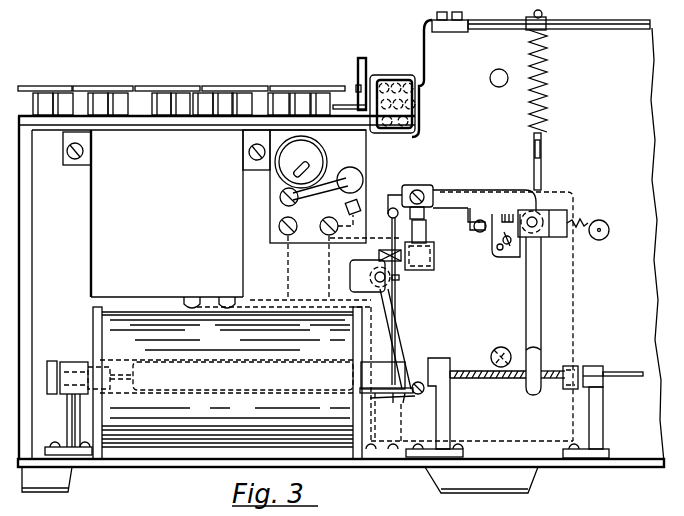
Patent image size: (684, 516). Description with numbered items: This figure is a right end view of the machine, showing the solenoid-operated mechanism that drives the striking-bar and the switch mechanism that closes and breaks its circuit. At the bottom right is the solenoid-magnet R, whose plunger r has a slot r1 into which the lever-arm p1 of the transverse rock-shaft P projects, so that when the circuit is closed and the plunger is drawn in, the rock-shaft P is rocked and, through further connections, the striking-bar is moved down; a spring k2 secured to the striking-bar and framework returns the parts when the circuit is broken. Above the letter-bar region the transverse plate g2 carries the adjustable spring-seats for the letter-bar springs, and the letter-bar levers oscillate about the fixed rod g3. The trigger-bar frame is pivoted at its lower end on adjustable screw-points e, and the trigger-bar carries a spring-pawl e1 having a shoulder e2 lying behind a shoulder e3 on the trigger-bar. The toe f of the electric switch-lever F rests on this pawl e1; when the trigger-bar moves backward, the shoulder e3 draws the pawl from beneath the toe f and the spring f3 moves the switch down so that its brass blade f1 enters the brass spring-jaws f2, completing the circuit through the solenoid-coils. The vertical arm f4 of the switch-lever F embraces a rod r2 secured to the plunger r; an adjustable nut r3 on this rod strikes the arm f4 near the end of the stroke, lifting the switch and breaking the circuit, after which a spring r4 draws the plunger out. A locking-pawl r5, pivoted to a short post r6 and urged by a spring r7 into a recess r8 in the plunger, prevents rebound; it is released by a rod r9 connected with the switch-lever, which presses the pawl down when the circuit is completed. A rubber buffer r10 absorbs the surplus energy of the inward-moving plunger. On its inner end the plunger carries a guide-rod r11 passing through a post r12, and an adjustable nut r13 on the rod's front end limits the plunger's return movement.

The solenoid-magnet R is at (227, 383).
The plunger r is at (418, 361).
The slot r1 is at (400, 362).
The rod r2 is at (491, 379).
The adjustable nut r3 is at (571, 388).
The spring r4 is at (469, 379).
The locking-pawl r5 is at (405, 398).
The short post r6 is at (425, 388).
The spring r7 is at (393, 399).
The recess r8 is at (367, 416).
The rod r9 is at (397, 298).
The rubber buffer r10 is at (90, 366).
The guide-rod r11 is at (47, 378).
The post r12 is at (68, 362).
The adjustable nut r13 is at (52, 360).
The rock-shaft P is at (375, 271).
The lever-arm p1 is at (396, 330).
The electric switch-lever F is at (450, 193).
The toe f is at (504, 216).
The brass blade f1 is at (425, 215).
The brass spring-jaws f2 is at (427, 232).
The spring f3 is at (592, 224).
The vertical arm f4 is at (526, 298).
The adjustable screw-points e is at (498, 350).
The spring-pawl e1 is at (495, 240).
The shoulder e2 is at (536, 208).
The shoulder e3 is at (508, 213).
The transverse plate g2 is at (462, 24).
The fixed rod g3 is at (490, 81).
The springs k2 is at (545, 82).